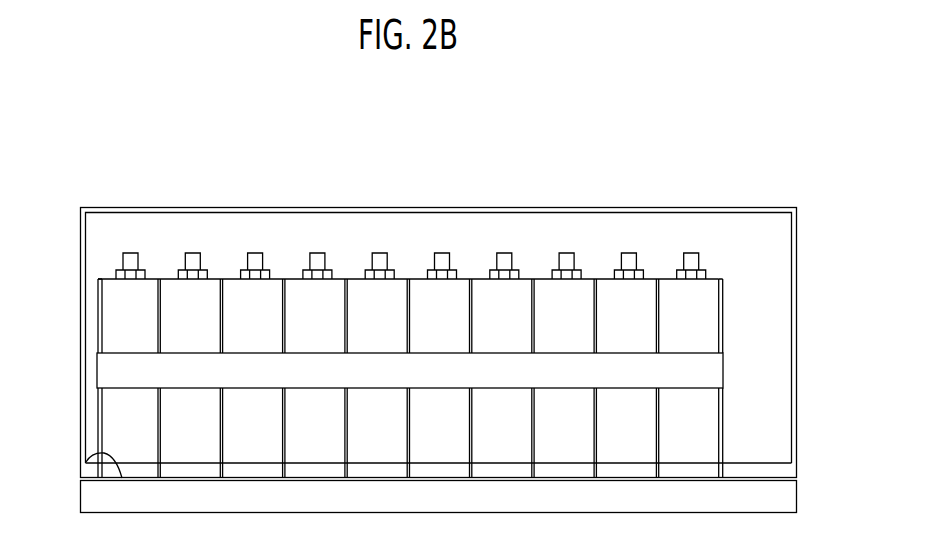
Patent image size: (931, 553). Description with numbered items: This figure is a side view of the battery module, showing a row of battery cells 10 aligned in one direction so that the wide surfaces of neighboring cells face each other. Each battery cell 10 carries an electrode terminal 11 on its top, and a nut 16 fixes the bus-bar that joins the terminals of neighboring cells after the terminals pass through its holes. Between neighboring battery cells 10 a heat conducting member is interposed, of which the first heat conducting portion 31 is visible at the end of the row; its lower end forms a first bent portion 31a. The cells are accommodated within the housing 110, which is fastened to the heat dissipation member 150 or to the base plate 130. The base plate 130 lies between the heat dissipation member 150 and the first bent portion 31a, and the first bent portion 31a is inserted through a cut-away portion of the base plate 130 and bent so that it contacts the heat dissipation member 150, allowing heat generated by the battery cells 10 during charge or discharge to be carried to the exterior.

The battery cell 10 is at (123, 295).
The positive electrode terminal 11 is at (131, 252).
The nut 16 is at (119, 268).
The first heat conducting portion 31 is at (100, 327).
The first bent portion 31a is at (84, 457).
The housing 110 is at (658, 207).
The base plate 130 is at (768, 468).
The heat dissipation member 150 is at (796, 497).